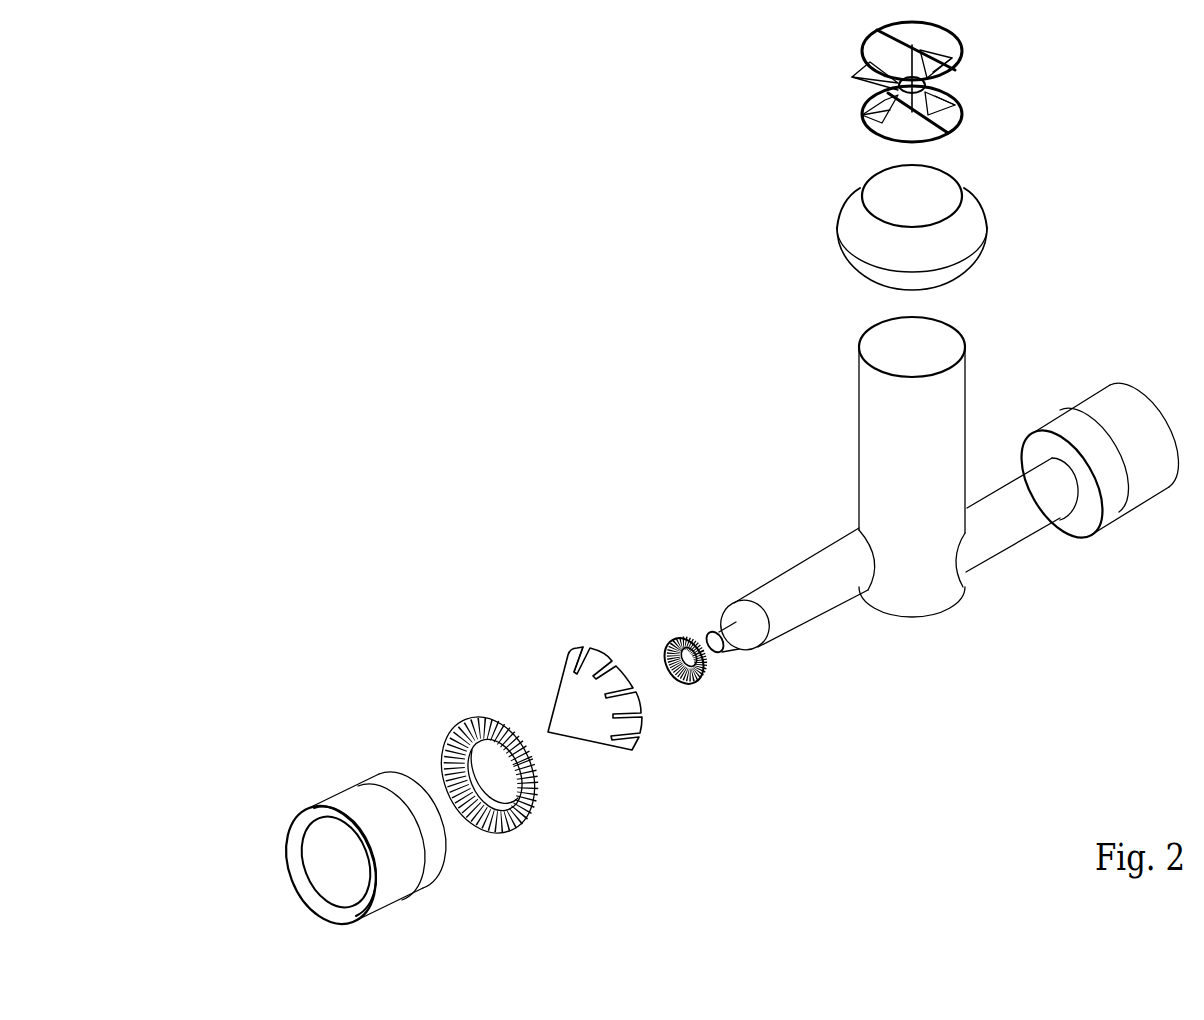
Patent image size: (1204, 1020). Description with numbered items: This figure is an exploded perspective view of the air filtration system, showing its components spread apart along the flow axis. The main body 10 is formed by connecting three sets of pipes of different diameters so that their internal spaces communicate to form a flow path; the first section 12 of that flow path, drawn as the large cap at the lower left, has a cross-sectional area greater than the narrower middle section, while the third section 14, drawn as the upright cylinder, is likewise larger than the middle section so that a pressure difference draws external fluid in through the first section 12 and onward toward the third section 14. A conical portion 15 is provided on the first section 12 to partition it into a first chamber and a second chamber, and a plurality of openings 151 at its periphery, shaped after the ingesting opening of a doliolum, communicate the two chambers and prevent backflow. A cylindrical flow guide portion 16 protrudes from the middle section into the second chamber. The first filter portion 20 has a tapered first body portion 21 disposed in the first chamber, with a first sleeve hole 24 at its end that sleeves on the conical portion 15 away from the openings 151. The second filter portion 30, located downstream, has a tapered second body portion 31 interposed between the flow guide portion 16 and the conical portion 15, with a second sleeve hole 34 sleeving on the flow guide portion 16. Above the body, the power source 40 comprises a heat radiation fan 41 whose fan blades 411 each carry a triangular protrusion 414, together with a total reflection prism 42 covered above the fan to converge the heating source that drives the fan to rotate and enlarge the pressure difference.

The main body 10 is at (945, 523).
The first section 12 is at (320, 845).
The third section 14 is at (948, 345).
The conical portion 15 is at (557, 614).
The opening 151 is at (597, 665).
The flow guide portion 16 is at (755, 637).
The first filter portion 20 is at (492, 728).
The first body portion 21 is at (510, 813).
The first sleeve hole 24 is at (483, 750).
The second filter portion 30 is at (698, 652).
The second body portion 31 is at (692, 688).
The second sleeve hole 34 is at (692, 648).
The power source 40 is at (826, 247).
The heat radiation fan 41 is at (908, 82).
The fan blade 411 is at (863, 130).
The triangular protrusion 414 is at (942, 90).
The total reflection prism 42 is at (863, 240).